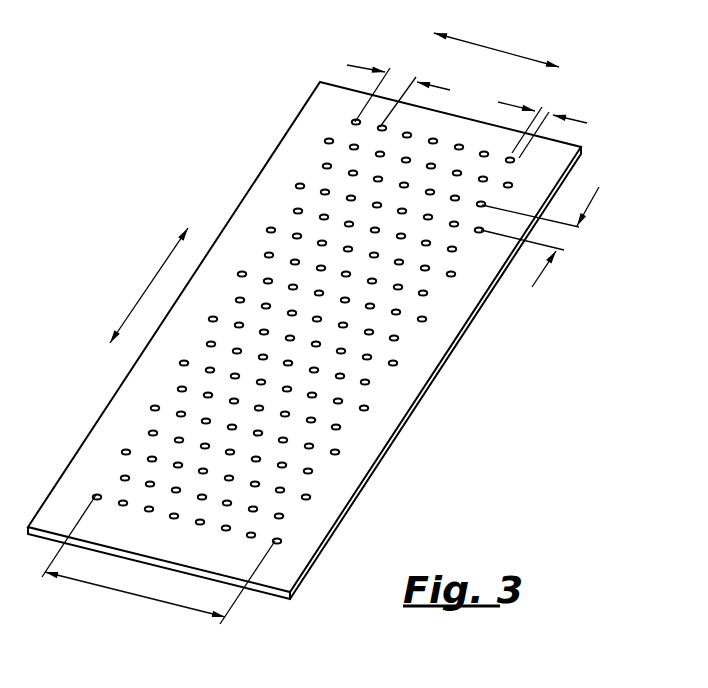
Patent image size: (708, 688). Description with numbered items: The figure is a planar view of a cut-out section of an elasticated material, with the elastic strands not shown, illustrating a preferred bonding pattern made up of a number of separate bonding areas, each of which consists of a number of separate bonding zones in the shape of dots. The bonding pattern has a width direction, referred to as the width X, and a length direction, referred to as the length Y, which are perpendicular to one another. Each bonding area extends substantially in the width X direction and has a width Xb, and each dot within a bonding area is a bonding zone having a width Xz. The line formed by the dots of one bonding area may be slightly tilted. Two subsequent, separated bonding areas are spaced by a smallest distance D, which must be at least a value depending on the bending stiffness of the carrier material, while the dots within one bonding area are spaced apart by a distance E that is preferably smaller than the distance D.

The width X is at (496, 44).
The length Y is at (148, 285).
The distance between bonding zones E is at (398, 85).
The width of bonding zone Xz is at (542, 114).
The smallest distance between bonding areas D is at (540, 237).
The width of bonding area Xb is at (158, 563).